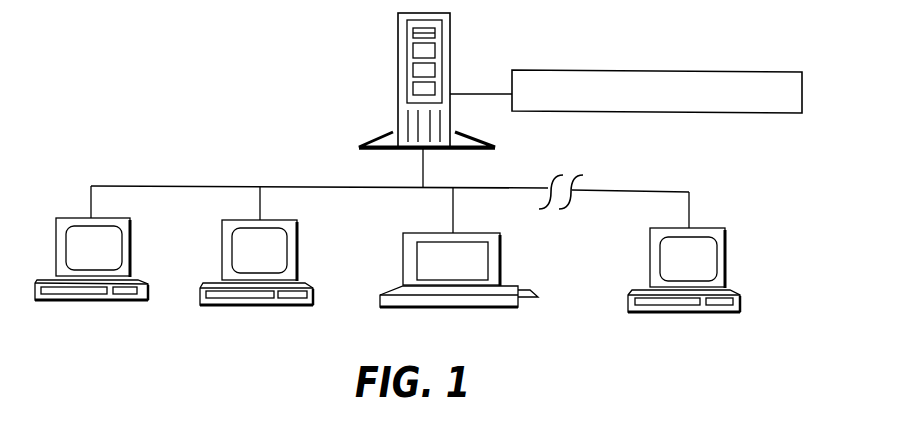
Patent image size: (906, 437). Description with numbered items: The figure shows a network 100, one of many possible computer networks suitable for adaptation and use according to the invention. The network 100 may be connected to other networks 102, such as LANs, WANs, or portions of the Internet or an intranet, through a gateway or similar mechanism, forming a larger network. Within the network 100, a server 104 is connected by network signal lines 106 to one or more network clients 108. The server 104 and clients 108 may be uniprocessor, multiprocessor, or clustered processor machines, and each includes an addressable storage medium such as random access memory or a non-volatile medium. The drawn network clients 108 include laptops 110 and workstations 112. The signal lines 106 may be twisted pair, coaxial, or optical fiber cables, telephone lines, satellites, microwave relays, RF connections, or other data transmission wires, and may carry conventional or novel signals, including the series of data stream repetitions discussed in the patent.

The network 100 is at (175, 37).
The other networks 102 is at (575, 71).
The server 104 is at (398, 102).
The network signal lines 106 is at (132, 186).
The network clients 108 is at (416, 288).
The laptops 110 is at (410, 308).
The workstations 112 is at (47, 303).